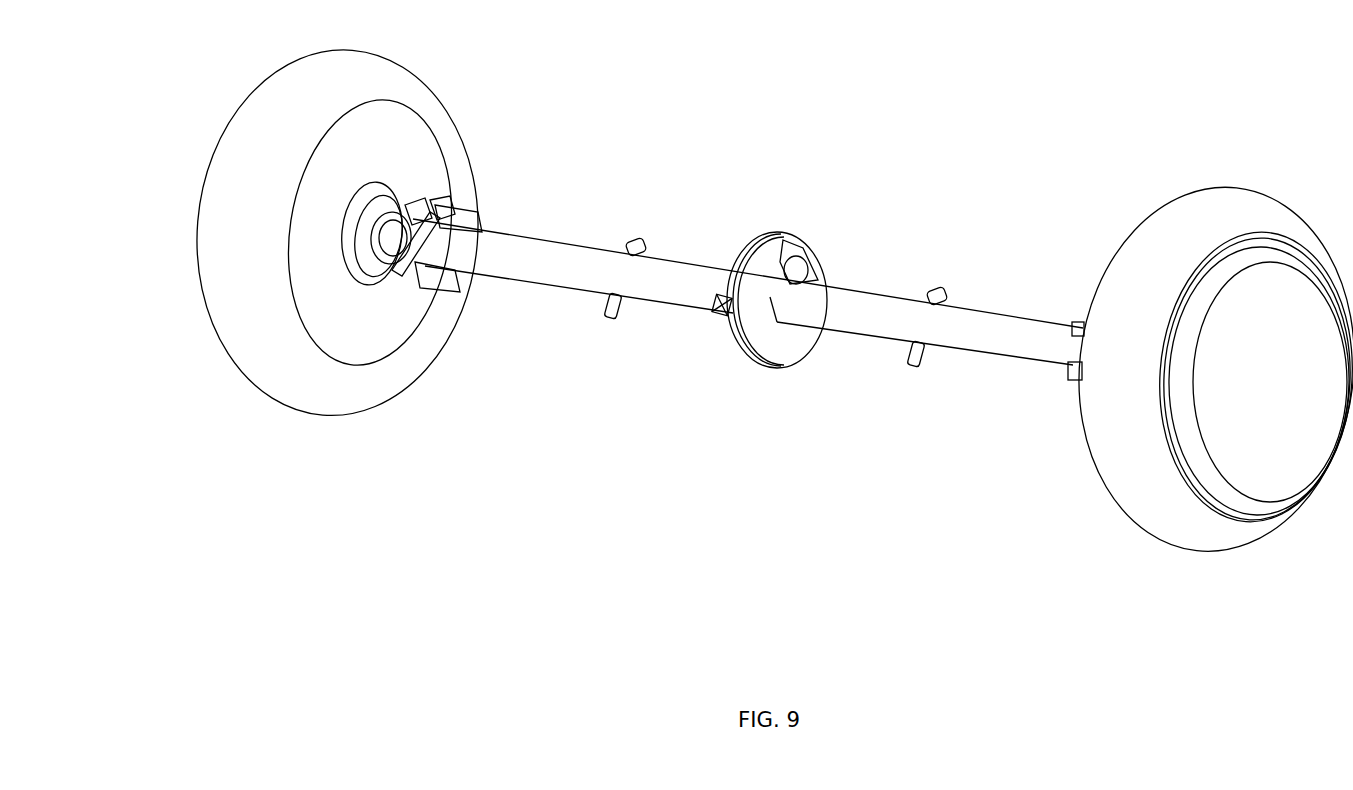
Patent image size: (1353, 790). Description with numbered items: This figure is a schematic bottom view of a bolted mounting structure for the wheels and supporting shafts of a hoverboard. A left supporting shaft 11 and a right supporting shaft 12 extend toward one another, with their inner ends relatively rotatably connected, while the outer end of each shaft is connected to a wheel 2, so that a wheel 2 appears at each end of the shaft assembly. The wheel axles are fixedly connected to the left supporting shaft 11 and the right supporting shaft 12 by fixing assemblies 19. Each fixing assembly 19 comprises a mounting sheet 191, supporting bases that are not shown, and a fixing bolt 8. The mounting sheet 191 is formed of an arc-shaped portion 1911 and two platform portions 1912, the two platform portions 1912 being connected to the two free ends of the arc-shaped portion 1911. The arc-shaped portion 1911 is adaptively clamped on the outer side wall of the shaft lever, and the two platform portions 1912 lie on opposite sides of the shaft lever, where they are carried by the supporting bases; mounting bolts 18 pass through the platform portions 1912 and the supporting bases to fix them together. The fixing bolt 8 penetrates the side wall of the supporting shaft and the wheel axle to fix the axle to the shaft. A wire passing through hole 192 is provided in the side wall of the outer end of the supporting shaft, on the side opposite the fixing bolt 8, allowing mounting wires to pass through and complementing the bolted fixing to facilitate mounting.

The wheel 2 is at (224, 170).
The mounting bolt 18 is at (372, 245).
The left supporting shaft 11 is at (668, 296).
The right supporting shaft 12 is at (896, 336).
The fixing assembly 19 is at (545, 199).
The mounting sheet 191 is at (515, 122).
The platform portion 1912 is at (424, 190).
The arc-shaped portion 1911 is at (447, 190).
The wire passing through hole 192 is at (449, 298).
The fixing bolt 8 is at (498, 203).